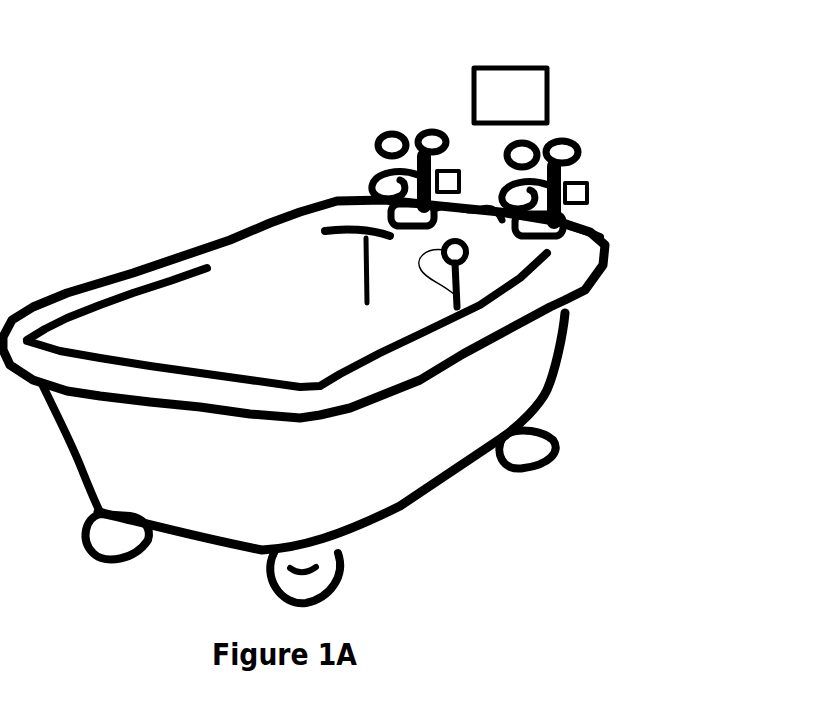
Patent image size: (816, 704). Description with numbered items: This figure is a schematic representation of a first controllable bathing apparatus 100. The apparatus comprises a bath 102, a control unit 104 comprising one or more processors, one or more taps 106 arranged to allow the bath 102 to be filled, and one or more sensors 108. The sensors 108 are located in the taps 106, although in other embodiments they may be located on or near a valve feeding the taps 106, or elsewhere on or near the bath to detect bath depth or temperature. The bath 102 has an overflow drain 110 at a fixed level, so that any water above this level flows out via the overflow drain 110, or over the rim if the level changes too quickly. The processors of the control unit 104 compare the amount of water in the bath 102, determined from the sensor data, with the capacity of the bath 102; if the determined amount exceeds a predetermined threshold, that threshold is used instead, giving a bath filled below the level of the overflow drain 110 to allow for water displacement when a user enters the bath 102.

The controllable bathing apparatus 100 is at (93, 87).
The bath 102 is at (304, 401).
The control unit 104 is at (510, 95).
The taps 106 is at (566, 168).
The sensors 108 is at (505, 143).
The overflow drain 110 is at (455, 295).